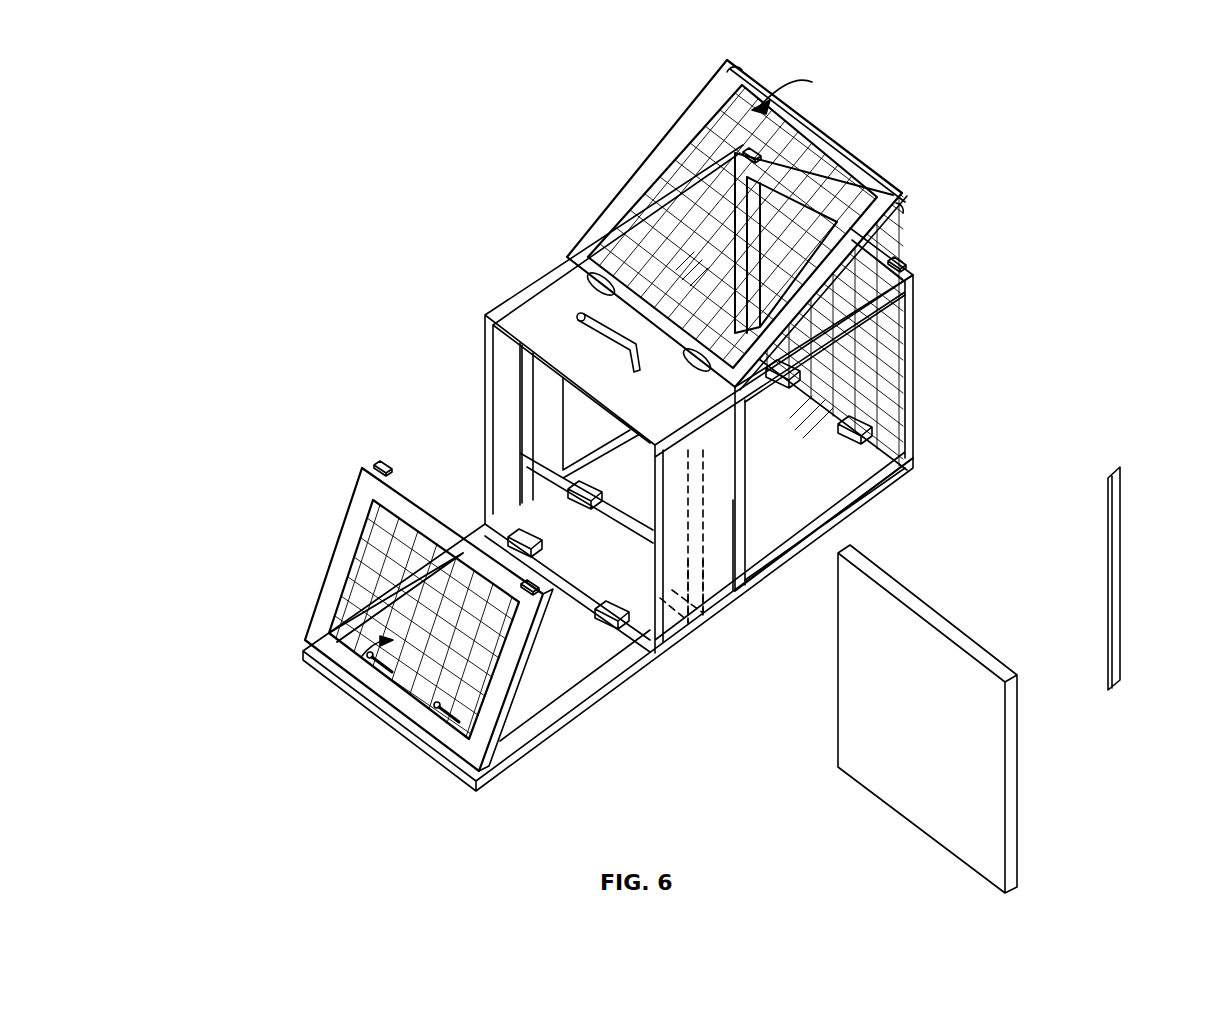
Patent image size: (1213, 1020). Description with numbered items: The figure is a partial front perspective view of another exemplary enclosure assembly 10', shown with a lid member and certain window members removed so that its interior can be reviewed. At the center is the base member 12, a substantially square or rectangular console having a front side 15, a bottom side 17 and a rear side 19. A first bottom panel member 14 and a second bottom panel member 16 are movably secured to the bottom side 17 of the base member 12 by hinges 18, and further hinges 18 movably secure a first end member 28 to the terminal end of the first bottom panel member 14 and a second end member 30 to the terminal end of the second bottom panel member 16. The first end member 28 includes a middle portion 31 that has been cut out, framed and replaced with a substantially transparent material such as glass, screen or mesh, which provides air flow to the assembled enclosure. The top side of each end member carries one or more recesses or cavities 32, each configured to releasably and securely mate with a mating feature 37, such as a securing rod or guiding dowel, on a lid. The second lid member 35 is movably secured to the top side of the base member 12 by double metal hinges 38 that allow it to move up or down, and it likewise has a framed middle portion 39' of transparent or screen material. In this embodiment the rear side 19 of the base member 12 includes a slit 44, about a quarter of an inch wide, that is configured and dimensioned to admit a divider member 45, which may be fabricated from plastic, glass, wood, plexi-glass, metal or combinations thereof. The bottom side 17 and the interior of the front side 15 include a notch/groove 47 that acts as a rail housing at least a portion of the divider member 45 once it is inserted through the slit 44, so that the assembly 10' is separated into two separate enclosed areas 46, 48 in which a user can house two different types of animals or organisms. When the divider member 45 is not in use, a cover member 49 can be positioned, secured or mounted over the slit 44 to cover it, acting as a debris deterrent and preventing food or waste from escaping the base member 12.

The enclosure assembly 10' is at (201, 73).
The base member 12 is at (497, 286).
The first bottom panel member 14 is at (490, 788).
The front side 15 is at (725, 598).
The second bottom panel member 16 is at (773, 390).
The bottom side 17 is at (665, 633).
The hinges 18 is at (570, 488).
The rear side 19 is at (490, 495).
The first end member 28 is at (345, 568).
The second end member 30 is at (835, 170).
The middle portion 31 is at (337, 620).
The recess or cavity 32 is at (383, 465).
The second lid member 35 is at (688, 123).
The mating feature 37 is at (722, 70).
The double metal hinges 38 is at (597, 276).
The middle portion 39' is at (799, 92).
The slit 44 is at (527, 398).
The divider member 45 is at (855, 716).
The enclosed area 46 is at (323, 368).
The notch/groove 47 is at (607, 558).
The enclosed area 48 is at (978, 453).
The cover member 49 is at (1118, 602).